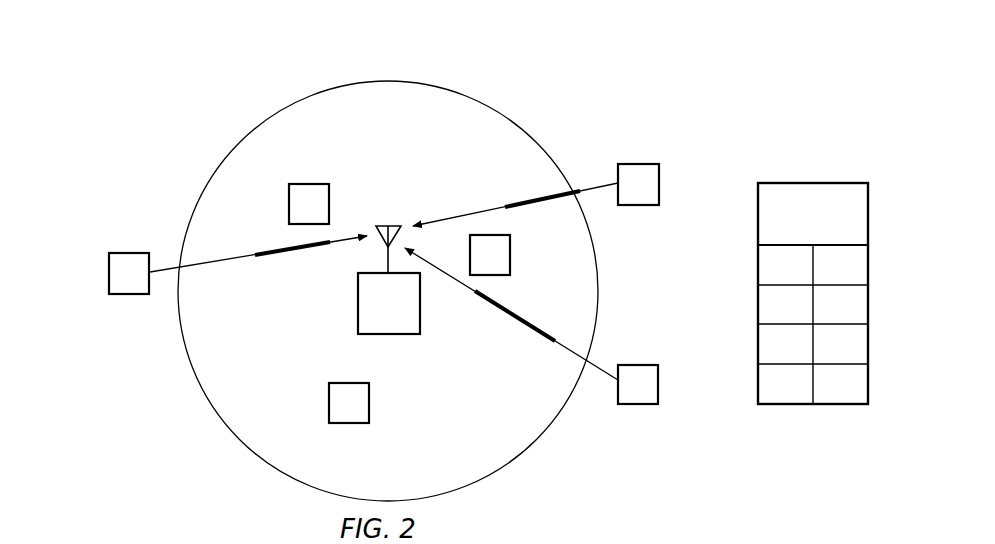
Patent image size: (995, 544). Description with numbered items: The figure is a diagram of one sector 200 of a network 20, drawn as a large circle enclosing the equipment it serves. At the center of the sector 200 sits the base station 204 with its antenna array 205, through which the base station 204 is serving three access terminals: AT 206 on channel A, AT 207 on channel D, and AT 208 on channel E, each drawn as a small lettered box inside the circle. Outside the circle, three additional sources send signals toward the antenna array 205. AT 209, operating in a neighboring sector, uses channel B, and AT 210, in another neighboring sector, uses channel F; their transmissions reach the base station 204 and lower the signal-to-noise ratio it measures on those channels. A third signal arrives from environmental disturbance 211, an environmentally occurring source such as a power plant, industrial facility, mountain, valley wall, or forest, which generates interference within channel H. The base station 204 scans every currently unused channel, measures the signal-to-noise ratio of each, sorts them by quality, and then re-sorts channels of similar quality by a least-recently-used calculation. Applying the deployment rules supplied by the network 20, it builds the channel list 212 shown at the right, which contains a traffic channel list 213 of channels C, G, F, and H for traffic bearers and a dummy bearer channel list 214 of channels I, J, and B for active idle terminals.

The network 20 is at (249, 68).
The sector 200 is at (490, 99).
The base station 204 is at (358, 309).
The antenna array 205 is at (384, 225).
The access terminal 206 is at (309, 184).
The access terminal 207 is at (329, 403).
The access terminal 208 is at (510, 255).
The access terminal 209 is at (128, 253).
The access terminal 210 is at (638, 164).
The environmental disturbance 211 is at (638, 404).
The channel list 212 is at (812, 292).
The traffic channel list 213 is at (788, 404).
The dummy bearer channel list 214 is at (838, 404).